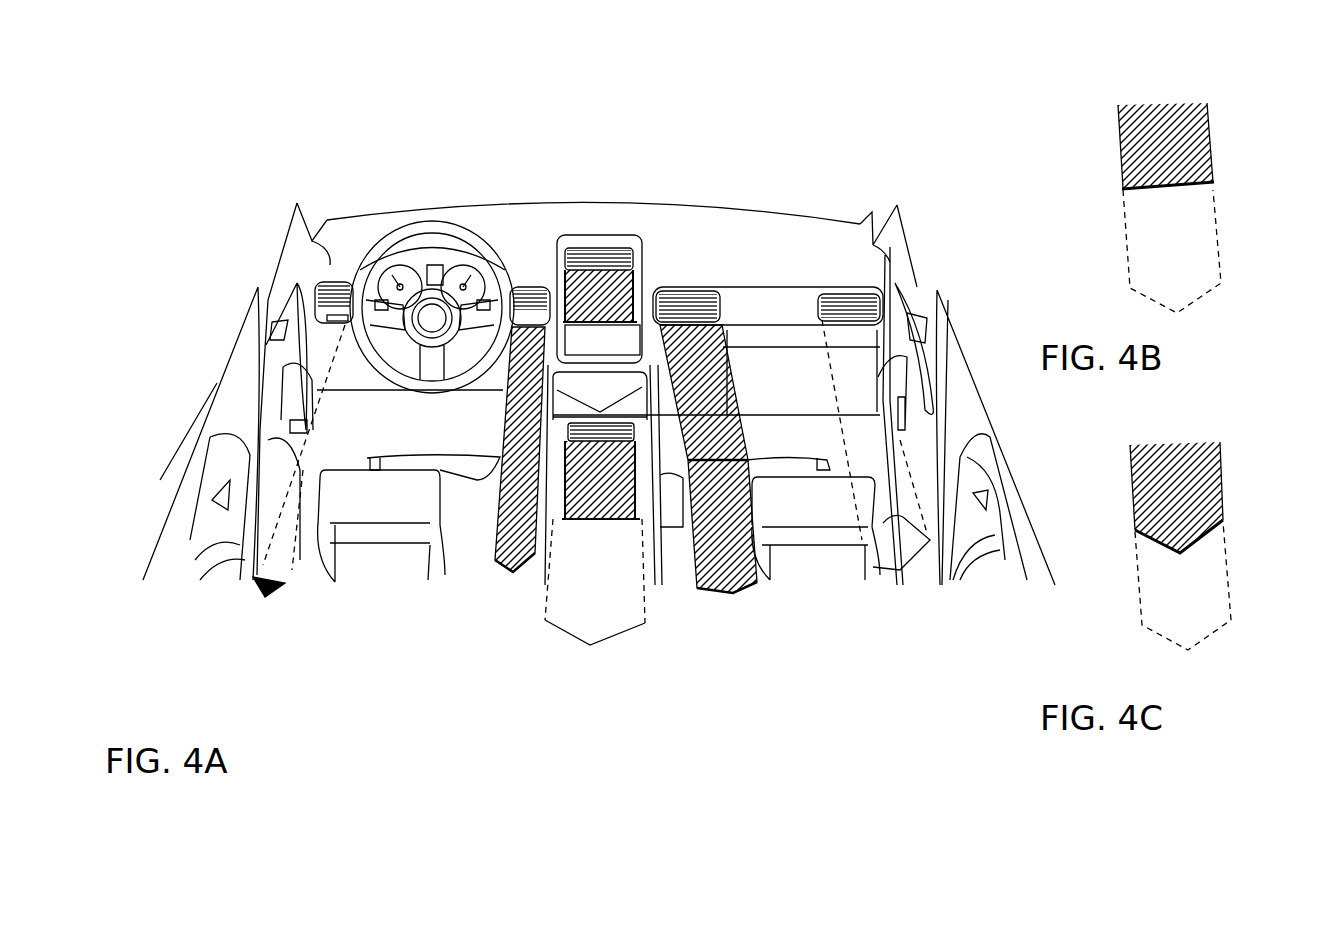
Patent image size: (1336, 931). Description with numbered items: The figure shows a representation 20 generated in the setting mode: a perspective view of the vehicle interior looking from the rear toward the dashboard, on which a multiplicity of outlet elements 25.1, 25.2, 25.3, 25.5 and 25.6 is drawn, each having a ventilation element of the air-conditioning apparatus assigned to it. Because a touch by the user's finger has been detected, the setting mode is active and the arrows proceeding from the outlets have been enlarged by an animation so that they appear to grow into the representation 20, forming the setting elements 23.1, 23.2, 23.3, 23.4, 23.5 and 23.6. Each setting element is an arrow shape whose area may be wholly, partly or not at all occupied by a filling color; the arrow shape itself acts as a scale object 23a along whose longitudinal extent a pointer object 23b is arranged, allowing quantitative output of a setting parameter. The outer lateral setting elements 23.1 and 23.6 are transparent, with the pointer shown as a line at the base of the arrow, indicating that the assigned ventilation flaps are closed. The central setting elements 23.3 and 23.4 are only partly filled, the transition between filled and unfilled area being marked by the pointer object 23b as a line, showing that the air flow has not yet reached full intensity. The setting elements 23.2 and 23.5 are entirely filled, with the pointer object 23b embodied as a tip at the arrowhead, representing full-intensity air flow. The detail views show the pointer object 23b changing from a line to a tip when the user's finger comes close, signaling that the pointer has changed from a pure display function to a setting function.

In FIG. 4A, the representation 20 is at (599, 393).
In FIG. 4A, the outlet element 25.1 is at (336, 272).
In FIG. 4A, the outlet element 25.2 is at (528, 272).
In FIG. 4A, the outlet element 25.3 is at (600, 240).
In FIG. 4A, the outlet element 25.5 is at (706, 275).
In FIG. 4A, the outlet element 25.6 is at (848, 275).
In FIG. 4A, the setting element 23.1 is at (256, 599).
In FIG. 4A, the setting element 23.2 is at (507, 573).
In FIG. 4A, the setting element 23.3 is at (642, 262).
In FIG. 4A, the setting element 23.4 is at (573, 637).
In FIG. 4A, the setting element 23.5 is at (752, 598).
In FIG. 4A, the setting element 23.6 is at (911, 580).
In FIG. 4B, the scale object 23a is at (1121, 213).
In FIG. 4C, the scale object 23a is at (1136, 577).
In FIG. 4B, the pointer object 23b is at (1217, 177).
In FIG. 4C, the pointer object 23b is at (1232, 514).